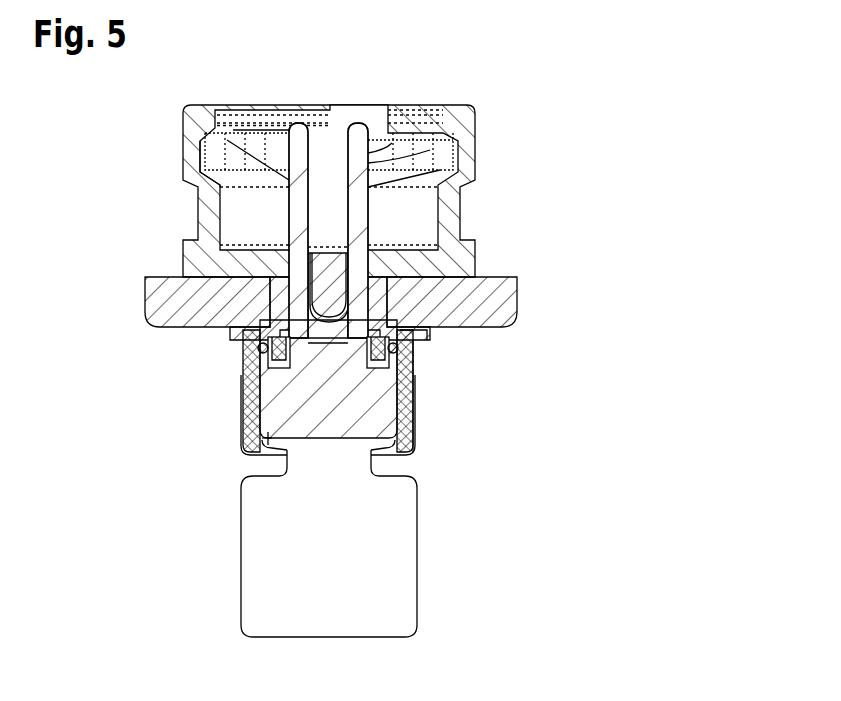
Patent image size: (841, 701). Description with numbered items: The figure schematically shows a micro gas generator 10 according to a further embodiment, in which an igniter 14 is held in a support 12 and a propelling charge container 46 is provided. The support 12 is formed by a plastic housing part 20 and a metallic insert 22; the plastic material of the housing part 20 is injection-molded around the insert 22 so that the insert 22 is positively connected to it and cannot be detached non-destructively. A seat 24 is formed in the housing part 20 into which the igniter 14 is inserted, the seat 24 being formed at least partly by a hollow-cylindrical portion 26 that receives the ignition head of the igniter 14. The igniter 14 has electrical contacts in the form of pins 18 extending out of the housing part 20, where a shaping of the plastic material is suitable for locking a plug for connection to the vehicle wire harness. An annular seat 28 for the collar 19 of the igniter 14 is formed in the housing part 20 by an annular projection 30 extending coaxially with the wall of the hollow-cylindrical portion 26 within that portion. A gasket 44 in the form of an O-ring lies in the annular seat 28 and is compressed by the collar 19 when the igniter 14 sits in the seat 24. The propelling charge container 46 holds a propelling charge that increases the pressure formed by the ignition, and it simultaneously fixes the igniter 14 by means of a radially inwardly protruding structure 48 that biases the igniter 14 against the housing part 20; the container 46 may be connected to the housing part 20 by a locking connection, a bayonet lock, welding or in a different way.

The micro gas generator 10 is at (630, 135).
The support 12 is at (494, 153).
The igniter 14 is at (270, 437).
The pins 18 is at (300, 232).
The collar 19 is at (247, 360).
The housing part 20 is at (199, 221).
The insert 22 is at (162, 307).
The seat 24 is at (243, 397).
The hollow-cylindrical portion 26 is at (243, 425).
The annular seat 28 is at (245, 342).
The annular projection 30 is at (413, 368).
The gasket 44 is at (420, 332).
The propelling charge container 46 is at (417, 520).
The radially inwardly protruding structure 48 is at (400, 462).